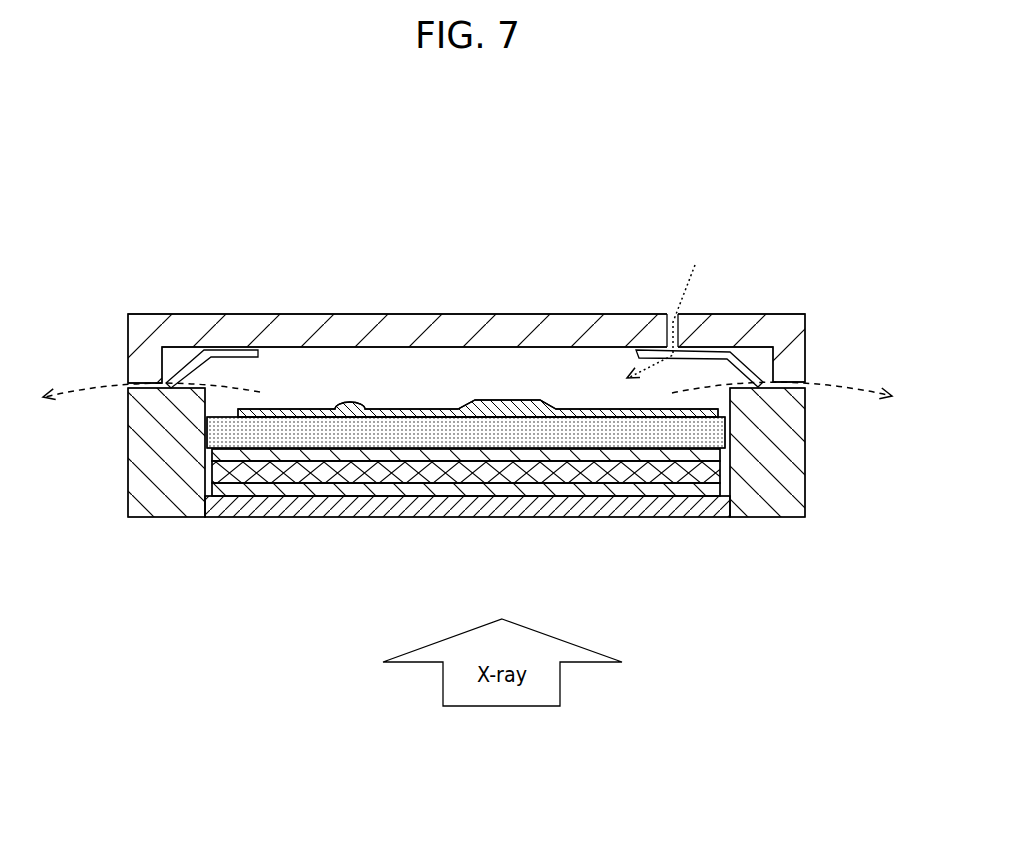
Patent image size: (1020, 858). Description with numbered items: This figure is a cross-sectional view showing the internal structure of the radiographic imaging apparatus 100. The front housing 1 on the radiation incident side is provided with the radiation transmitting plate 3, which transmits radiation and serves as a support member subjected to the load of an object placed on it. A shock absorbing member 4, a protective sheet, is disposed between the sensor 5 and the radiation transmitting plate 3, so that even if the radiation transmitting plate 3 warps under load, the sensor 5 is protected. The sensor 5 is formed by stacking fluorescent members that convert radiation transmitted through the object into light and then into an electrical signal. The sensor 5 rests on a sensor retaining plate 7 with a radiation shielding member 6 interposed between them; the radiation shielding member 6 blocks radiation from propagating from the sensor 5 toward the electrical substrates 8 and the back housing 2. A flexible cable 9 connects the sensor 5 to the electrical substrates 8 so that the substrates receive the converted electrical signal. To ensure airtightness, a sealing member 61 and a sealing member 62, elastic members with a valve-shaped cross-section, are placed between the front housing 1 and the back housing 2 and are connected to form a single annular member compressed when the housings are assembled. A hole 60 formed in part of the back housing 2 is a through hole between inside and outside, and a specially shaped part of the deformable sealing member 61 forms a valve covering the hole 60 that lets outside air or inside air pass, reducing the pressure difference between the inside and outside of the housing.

The radiographic imaging apparatus 100 is at (784, 190).
The front housing 1 is at (745, 510).
The back housing 2 is at (428, 326).
The radiation transmitting plate 3 is at (657, 516).
The shock absorbing member 4 is at (718, 490).
The sensor 5 is at (720, 465).
The radiation shielding member 6 is at (216, 453).
The sensor retaining plate 7 is at (177, 405).
The electrical substrates 8 is at (287, 414).
The flexible cable 9 is at (344, 402).
The hole 60 is at (669, 314).
The sealing member 61 is at (775, 352).
The sealing member 62 is at (224, 352).